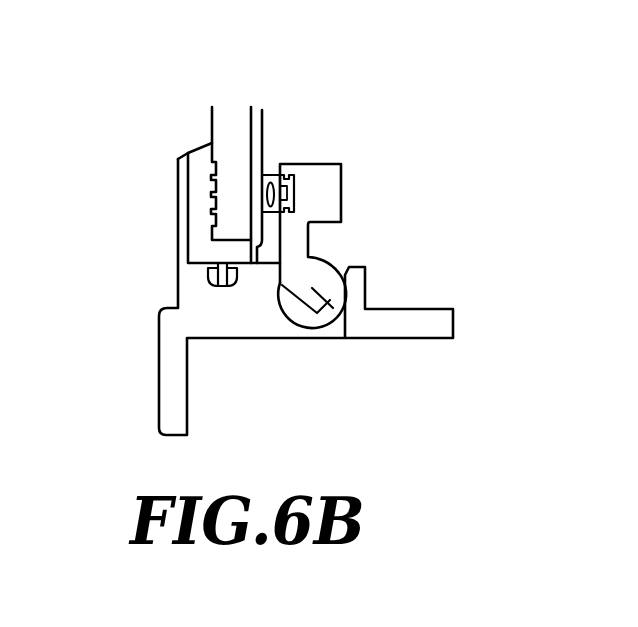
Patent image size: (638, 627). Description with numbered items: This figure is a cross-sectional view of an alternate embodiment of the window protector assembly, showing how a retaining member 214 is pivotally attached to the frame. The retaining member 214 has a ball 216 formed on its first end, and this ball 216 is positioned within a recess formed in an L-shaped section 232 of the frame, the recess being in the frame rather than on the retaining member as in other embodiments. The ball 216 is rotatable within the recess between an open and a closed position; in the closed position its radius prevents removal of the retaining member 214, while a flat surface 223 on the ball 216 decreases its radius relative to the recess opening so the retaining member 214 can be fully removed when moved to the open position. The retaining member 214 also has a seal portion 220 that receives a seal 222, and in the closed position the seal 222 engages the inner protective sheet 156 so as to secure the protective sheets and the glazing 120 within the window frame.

The glazing 120 is at (237, 160).
The inner protective sheet 156 is at (260, 130).
The retaining member 214 is at (352, 245).
The ball 216 is at (343, 312).
The seal portion 220 is at (325, 188).
The seal 222 is at (266, 172).
The flat surface 223 is at (297, 301).
The L-shaped section 232 is at (172, 332).